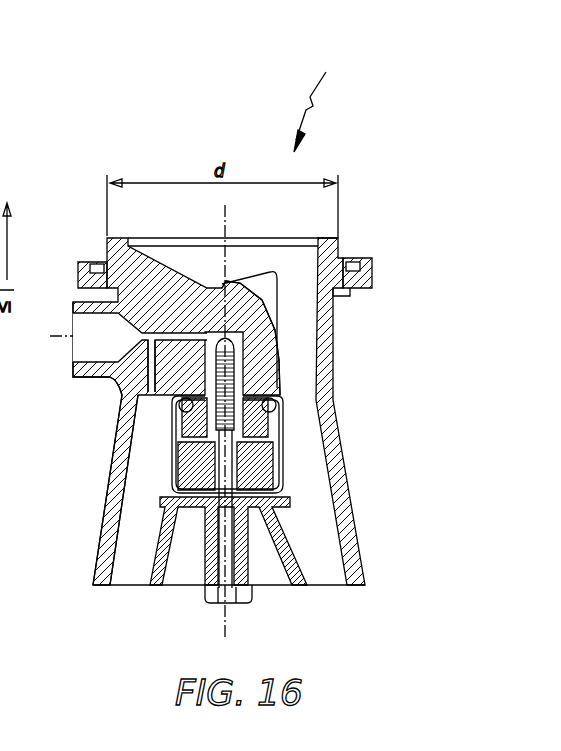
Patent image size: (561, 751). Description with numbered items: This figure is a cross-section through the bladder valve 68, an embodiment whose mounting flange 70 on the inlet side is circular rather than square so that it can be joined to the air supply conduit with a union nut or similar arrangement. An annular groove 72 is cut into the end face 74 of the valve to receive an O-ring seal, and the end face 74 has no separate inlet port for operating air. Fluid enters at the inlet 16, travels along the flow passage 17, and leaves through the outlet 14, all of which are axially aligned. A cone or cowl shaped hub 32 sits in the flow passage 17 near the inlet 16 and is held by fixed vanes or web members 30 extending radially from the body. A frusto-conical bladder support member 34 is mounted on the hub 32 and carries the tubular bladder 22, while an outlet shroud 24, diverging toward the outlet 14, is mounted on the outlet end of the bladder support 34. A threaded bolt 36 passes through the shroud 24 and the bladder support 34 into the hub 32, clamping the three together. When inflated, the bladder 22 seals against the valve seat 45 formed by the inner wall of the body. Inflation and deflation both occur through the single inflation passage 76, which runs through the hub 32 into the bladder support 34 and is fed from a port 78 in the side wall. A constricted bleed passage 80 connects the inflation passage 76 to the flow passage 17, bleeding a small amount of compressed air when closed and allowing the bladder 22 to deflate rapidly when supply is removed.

The outlet 14 is at (335, 574).
The inlet 16 is at (287, 254).
The flow passage 17 is at (127, 482).
The tubular bladder 22 is at (300, 400).
The outlet shroud 24 is at (297, 540).
The vanes or web members 30 is at (165, 296).
The hub 32 is at (262, 358).
The bladder support member 34 is at (282, 472).
The threaded bolt 36 is at (210, 600).
The valve seat 45 is at (312, 440).
The valve 68 is at (326, 102).
The mounting flange 70 is at (348, 300).
The annular groove 72 is at (93, 262).
The end face 74 is at (357, 270).
The inflation passage 76 is at (100, 380).
The port 78 is at (72, 344).
The bleed passage 80 is at (148, 394).